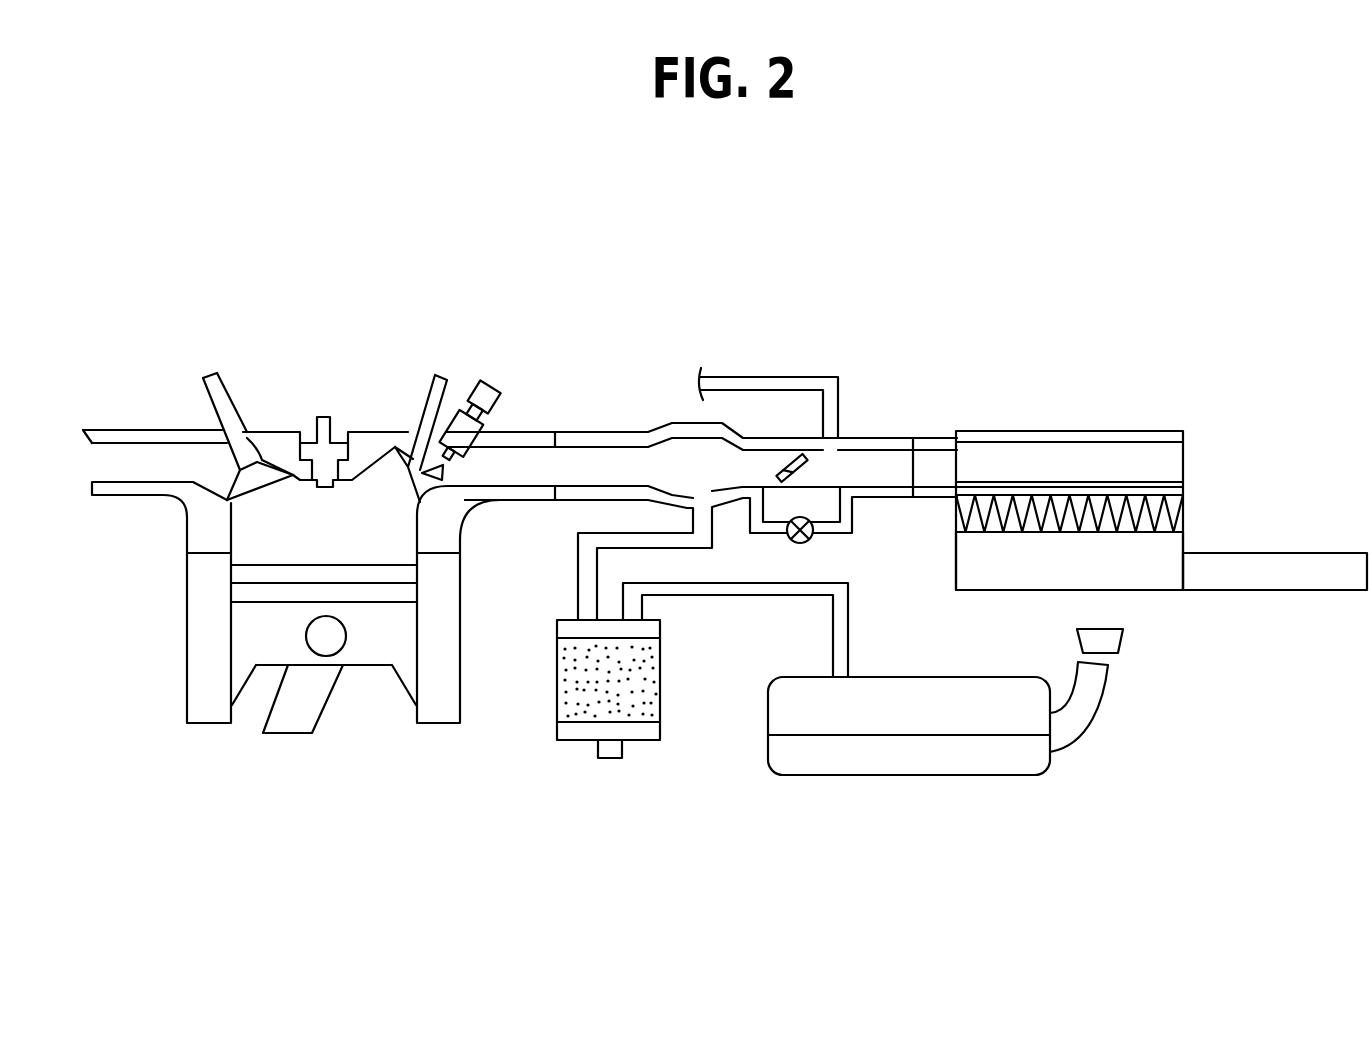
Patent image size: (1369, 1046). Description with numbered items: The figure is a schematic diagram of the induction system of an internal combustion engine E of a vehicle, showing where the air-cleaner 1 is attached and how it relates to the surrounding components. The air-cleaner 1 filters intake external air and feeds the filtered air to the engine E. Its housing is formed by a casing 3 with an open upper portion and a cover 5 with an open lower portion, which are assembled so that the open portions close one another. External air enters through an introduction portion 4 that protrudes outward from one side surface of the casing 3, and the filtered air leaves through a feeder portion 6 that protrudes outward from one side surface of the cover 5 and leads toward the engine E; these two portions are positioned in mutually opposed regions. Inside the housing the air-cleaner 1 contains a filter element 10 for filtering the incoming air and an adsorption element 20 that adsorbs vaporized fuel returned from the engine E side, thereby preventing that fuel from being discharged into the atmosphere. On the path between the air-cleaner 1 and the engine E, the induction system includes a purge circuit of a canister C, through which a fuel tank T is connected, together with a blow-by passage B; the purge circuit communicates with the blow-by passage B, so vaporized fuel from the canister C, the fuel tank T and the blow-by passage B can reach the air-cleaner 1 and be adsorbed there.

The engine E is at (160, 618).
The blow-by passage B is at (740, 376).
The feeder portion 6 is at (937, 438).
The air-cleaner 1 is at (1144, 501).
The cover 5 is at (1152, 430).
The adsorption element 20 is at (1140, 485).
The filter element 10 is at (1185, 507).
The casing 3 is at (1157, 590).
The introduction portion 4 is at (1280, 590).
The canister C is at (557, 730).
The fuel tank T is at (880, 762).